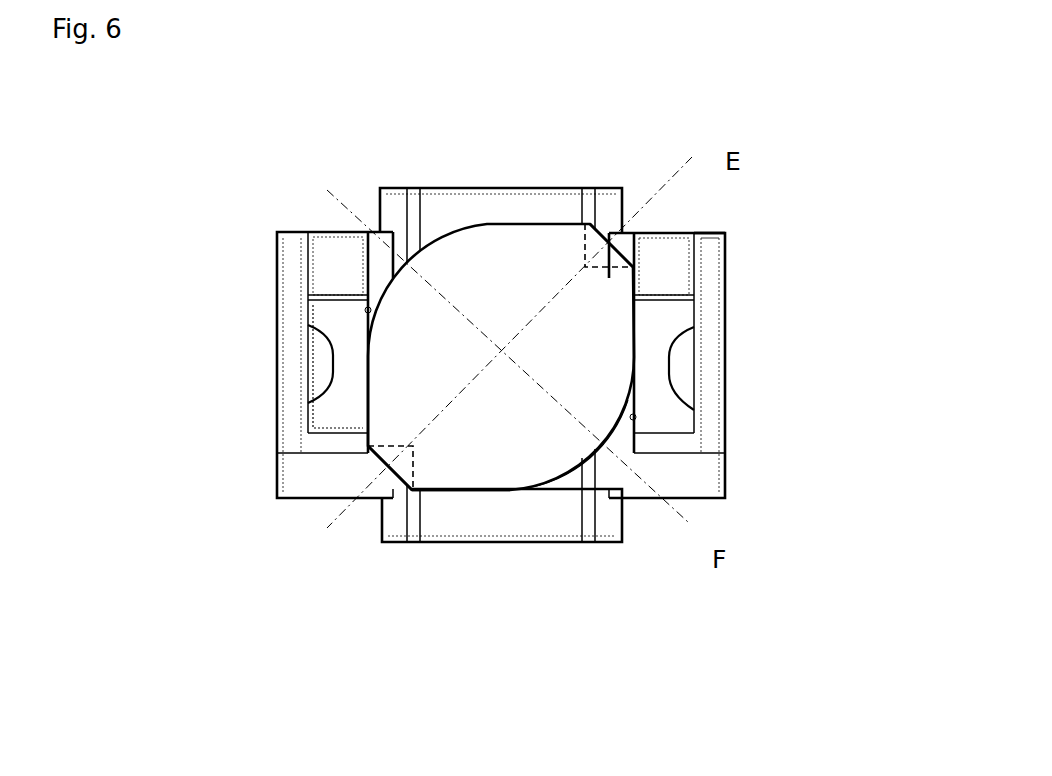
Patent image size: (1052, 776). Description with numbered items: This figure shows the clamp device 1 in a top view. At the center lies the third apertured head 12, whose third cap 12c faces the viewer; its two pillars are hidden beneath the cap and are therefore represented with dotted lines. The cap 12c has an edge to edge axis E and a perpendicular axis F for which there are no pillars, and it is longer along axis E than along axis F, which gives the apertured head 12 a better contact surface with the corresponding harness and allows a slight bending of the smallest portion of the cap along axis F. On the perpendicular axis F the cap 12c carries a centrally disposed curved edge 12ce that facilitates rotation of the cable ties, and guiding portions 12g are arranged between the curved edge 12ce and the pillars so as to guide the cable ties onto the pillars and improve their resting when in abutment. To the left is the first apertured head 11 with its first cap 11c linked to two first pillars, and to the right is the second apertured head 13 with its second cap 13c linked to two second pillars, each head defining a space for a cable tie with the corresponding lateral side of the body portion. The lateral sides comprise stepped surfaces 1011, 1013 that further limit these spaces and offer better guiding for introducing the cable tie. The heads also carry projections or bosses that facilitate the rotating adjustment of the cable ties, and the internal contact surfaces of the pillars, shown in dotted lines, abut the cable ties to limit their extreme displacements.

The clamp device 1 is at (393, 171).
The first apertured head 11 is at (227, 228).
The first cap 11c is at (298, 325).
The third apertured head 12 is at (525, 239).
The third cap 12c is at (547, 458).
The curved edge 12ce is at (583, 458).
The guiding portion 12g is at (470, 497).
The second apertured head 13 is at (720, 417).
The second cap 13c is at (715, 253).
The stepped surface 1011 is at (363, 310).
The stepped surface 1013 is at (632, 417).